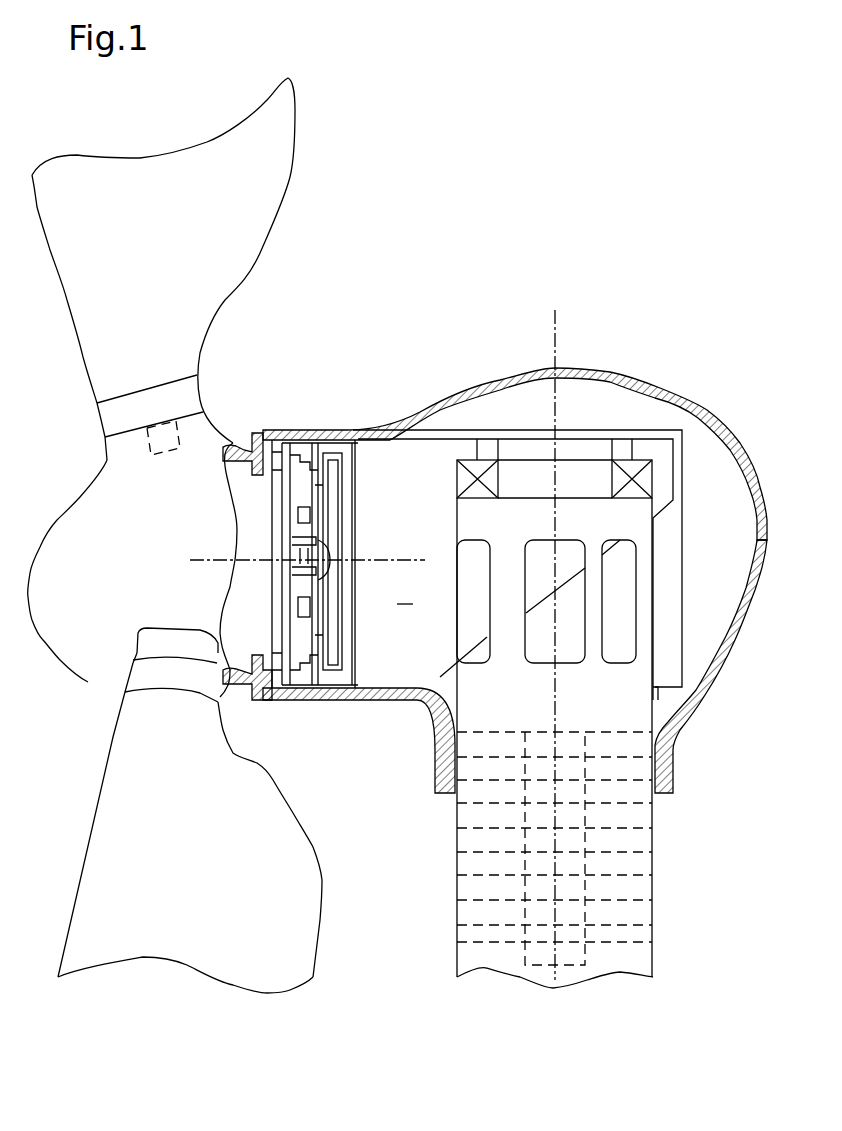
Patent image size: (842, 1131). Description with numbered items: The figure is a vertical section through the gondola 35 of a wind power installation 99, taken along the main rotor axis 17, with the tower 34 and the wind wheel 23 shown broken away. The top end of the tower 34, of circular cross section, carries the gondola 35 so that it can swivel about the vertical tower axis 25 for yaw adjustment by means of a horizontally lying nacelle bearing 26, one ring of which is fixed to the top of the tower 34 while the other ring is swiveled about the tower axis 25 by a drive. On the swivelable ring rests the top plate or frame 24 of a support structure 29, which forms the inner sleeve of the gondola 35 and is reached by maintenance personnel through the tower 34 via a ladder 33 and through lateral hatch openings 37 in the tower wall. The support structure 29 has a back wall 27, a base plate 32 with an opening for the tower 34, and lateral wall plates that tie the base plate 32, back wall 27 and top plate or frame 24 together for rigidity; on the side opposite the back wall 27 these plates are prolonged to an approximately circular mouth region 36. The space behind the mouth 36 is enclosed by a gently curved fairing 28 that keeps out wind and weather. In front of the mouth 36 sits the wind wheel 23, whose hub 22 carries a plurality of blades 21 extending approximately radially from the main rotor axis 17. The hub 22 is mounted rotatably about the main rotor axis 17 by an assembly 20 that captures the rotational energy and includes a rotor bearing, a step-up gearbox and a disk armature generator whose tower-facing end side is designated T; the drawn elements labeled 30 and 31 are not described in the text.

The main rotor axis 17 is at (208, 560).
The assembly 20 is at (355, 532).
The blades 21 is at (130, 800).
The hub 22 is at (103, 662).
The wind wheel 23 is at (296, 147).
The top plate or frame 24 is at (518, 437).
The tower axis 25 is at (557, 402).
The nacelle bearing 26 is at (637, 465).
The back wall 27 is at (683, 446).
The fairing 28 is at (762, 556).
The support structure 29 is at (683, 488).
The motor body 30 is at (677, 615).
The stator 31 is at (622, 733).
The base plate 32 is at (667, 690).
The ladder 33 is at (620, 830).
The tower 34 is at (645, 865).
The gondola 35 is at (467, 391).
The mouth region 36 is at (283, 700).
The hatch openings 37 is at (632, 622).
The wind power installation 99 is at (455, 258).